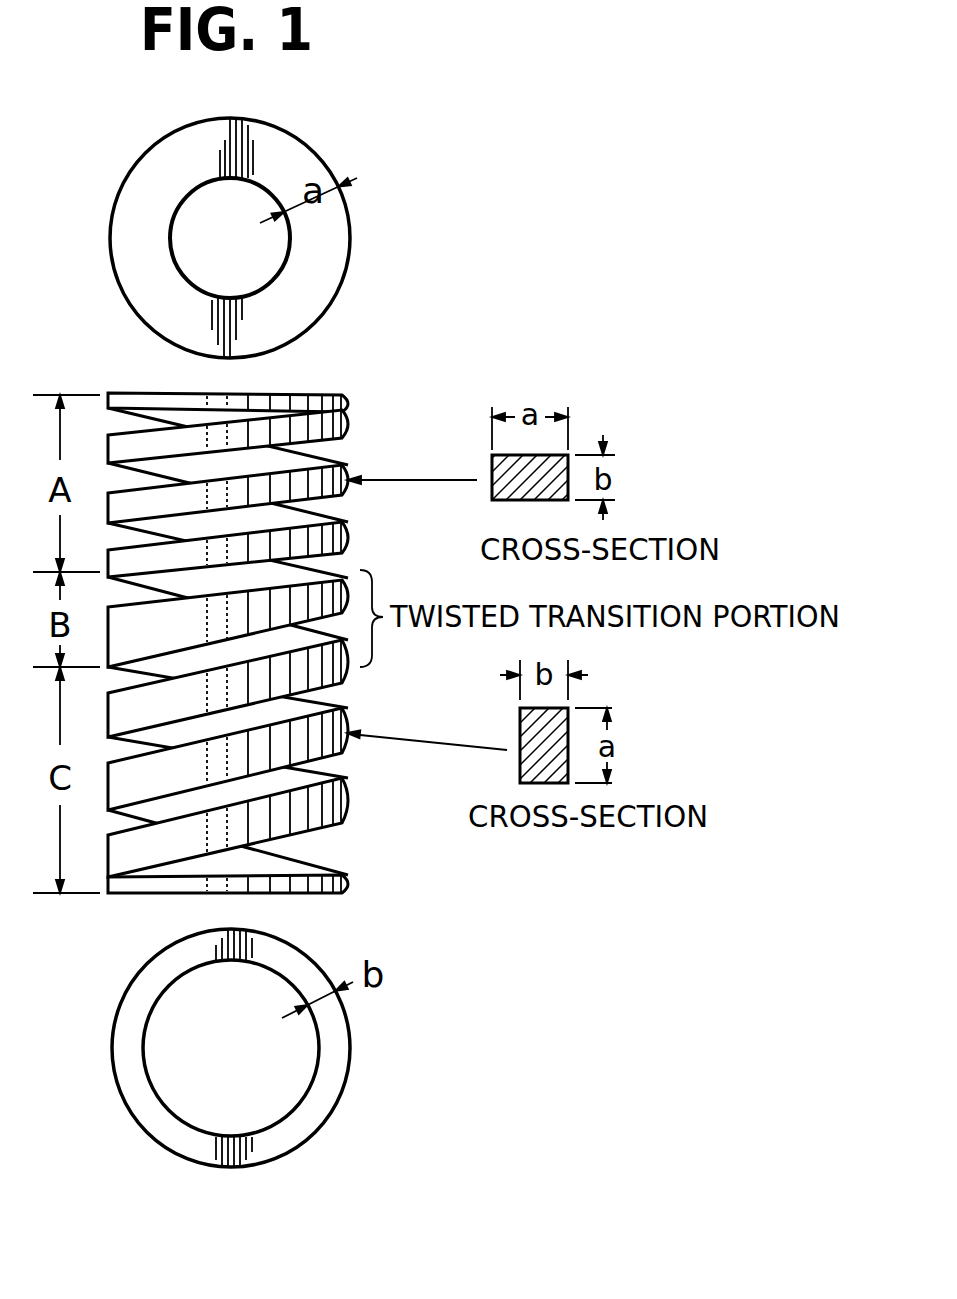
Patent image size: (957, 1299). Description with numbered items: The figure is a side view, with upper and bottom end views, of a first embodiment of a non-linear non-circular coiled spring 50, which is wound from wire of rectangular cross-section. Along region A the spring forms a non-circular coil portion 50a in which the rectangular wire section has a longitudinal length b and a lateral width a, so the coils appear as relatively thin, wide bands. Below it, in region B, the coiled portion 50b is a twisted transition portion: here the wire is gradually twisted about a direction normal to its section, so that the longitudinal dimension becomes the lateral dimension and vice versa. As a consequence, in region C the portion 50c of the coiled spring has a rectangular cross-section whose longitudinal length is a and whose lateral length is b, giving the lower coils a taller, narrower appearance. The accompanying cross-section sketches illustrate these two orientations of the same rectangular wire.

The non-linear non-circular coiled spring 50 is at (280, 609).
The non-circular coil portion 50a is at (347, 473).
The twisted transition portion 50b is at (297, 605).
The coil portion 50c is at (312, 813).